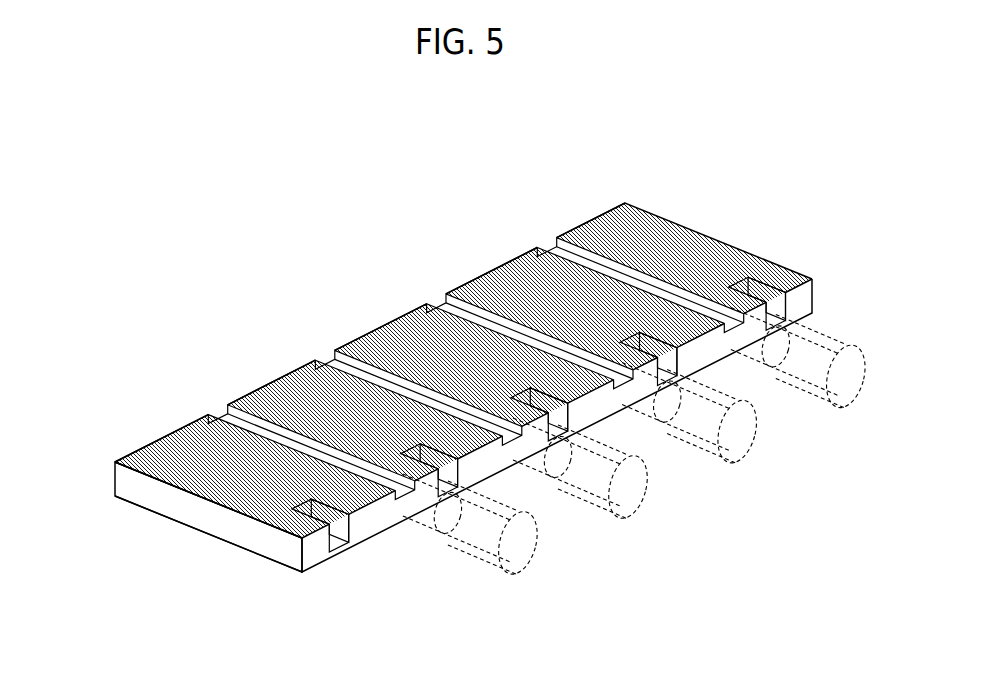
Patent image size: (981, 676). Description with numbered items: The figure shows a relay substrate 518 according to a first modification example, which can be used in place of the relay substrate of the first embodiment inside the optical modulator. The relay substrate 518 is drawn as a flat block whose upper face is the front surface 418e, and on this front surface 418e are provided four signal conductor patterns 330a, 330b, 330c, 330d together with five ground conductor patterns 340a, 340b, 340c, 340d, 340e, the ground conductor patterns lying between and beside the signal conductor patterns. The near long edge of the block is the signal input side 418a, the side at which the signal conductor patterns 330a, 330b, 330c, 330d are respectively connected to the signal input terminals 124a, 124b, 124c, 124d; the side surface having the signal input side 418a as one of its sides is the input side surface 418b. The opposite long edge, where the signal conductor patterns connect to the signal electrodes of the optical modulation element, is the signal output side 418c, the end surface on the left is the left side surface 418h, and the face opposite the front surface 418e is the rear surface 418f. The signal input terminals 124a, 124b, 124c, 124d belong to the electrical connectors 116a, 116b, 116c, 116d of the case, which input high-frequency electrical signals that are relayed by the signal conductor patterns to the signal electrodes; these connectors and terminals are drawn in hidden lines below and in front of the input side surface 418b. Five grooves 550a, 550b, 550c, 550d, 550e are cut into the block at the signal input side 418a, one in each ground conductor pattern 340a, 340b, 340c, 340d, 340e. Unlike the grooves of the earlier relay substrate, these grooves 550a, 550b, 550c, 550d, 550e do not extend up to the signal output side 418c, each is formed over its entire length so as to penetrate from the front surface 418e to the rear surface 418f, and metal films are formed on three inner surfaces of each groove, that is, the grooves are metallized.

The relay substrate 518 is at (165, 250).
The signal conductor pattern 330a is at (556, 262).
The signal conductor pattern 330b is at (442, 305).
The signal conductor pattern 330c is at (326, 360).
The signal conductor pattern 330d is at (217, 412).
The ground conductor pattern 340a is at (598, 236).
The ground conductor pattern 340b is at (480, 290).
The ground conductor pattern 340c is at (367, 343).
The ground conductor pattern 340d is at (262, 390).
The ground conductor pattern 340e is at (174, 440).
The signal input side 418a is at (276, 524).
The input side surface 418b is at (331, 553).
The signal output side 418c is at (132, 452).
The front surface 418e is at (695, 256).
The rear surface 418f is at (272, 562).
The left side surface 418h is at (162, 502).
The groove 550a is at (790, 303).
The groove 550b is at (682, 364).
The groove 550c is at (572, 418).
The groove 550d is at (463, 473).
The groove 550e is at (366, 527).
The electrical connector 116a is at (866, 372).
The electrical connector 116b is at (757, 450).
The electrical connector 116c is at (650, 511).
The electrical connector 116d is at (536, 568).
The signal input terminal 124a is at (803, 385).
The signal input terminal 124b is at (697, 446).
The signal input terminal 124c is at (586, 500).
The signal input terminal 124d is at (488, 540).